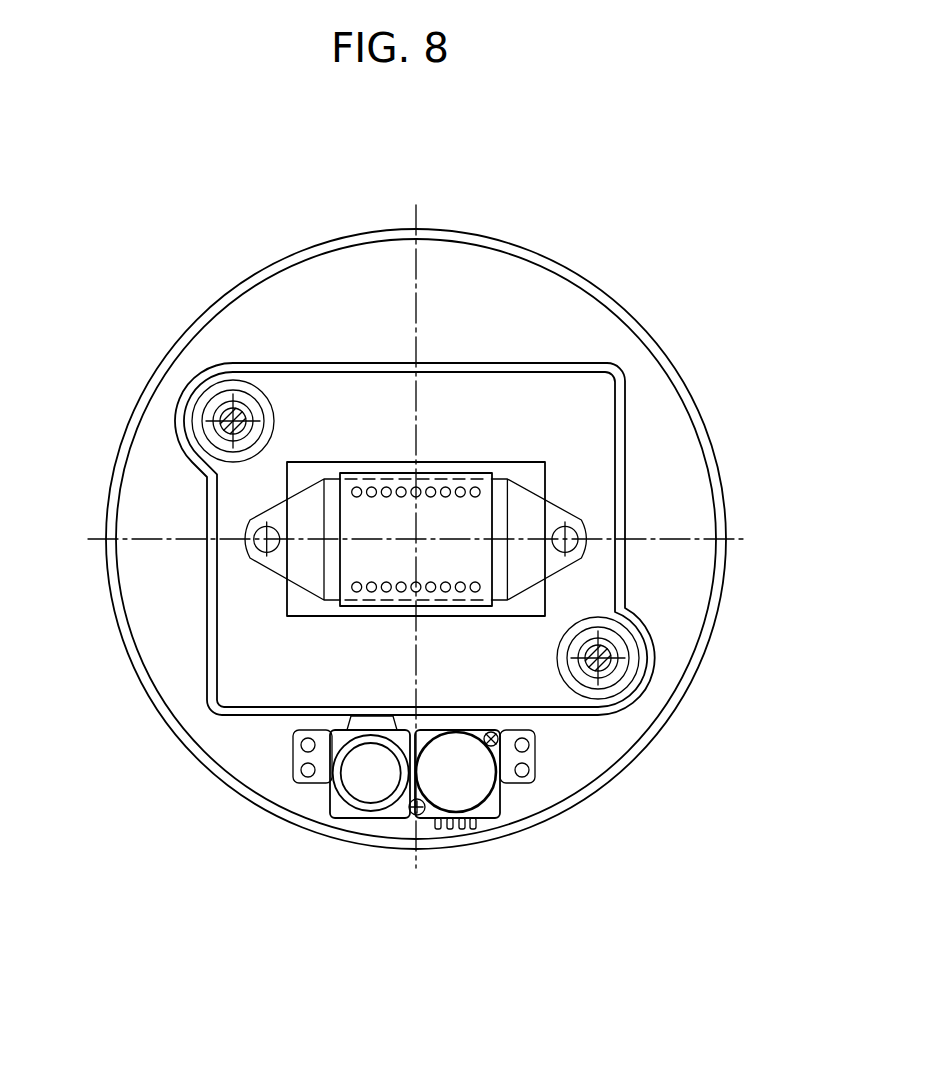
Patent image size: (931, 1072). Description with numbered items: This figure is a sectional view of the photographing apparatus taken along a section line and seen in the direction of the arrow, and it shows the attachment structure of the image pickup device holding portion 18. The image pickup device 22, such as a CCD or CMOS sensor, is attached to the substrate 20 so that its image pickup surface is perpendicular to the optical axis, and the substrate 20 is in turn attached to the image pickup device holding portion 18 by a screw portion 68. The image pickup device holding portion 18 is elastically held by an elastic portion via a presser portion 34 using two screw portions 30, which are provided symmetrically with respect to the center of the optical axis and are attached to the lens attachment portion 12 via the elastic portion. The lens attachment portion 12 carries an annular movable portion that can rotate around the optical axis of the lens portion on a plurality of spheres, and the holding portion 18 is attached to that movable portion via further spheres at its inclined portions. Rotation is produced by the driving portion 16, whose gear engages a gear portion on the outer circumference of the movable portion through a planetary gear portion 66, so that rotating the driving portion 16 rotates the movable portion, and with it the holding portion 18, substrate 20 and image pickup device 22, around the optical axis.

The lens attachment portion 12 is at (598, 288).
The driving portion 16 is at (482, 795).
The image pickup device holding portion 18 is at (353, 362).
The substrate 20 is at (340, 590).
The image pickup device 22 is at (465, 479).
The screw portion 30 is at (223, 418).
The presser portion 34 is at (228, 443).
The planetary gear portion 66 is at (347, 802).
The screw portion 68 is at (258, 545).